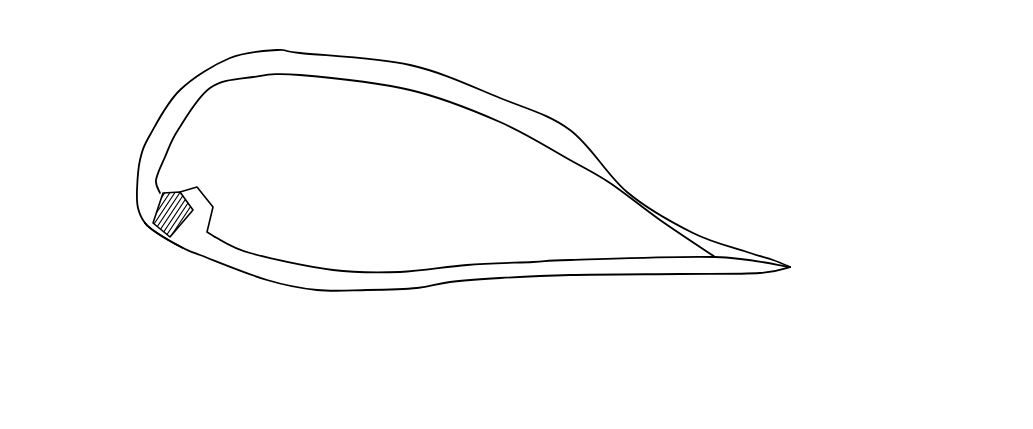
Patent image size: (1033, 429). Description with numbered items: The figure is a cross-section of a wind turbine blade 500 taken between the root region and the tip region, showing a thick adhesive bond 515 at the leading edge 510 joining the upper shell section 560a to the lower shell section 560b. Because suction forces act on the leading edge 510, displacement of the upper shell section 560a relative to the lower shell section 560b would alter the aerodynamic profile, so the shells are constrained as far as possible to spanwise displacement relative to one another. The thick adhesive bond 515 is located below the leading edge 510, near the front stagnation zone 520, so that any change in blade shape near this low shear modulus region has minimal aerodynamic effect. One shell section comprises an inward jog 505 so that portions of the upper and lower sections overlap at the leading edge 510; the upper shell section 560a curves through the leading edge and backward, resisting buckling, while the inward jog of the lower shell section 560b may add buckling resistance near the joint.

The blade 500 is at (633, 116).
The inward jog 505 is at (204, 203).
The leading edge 510 is at (101, 162).
The thick adhesive bond 515 is at (153, 232).
The front stagnation zone 520 is at (162, 252).
The upper shell section 560a is at (416, 59).
The lower shell section 560b is at (366, 303).